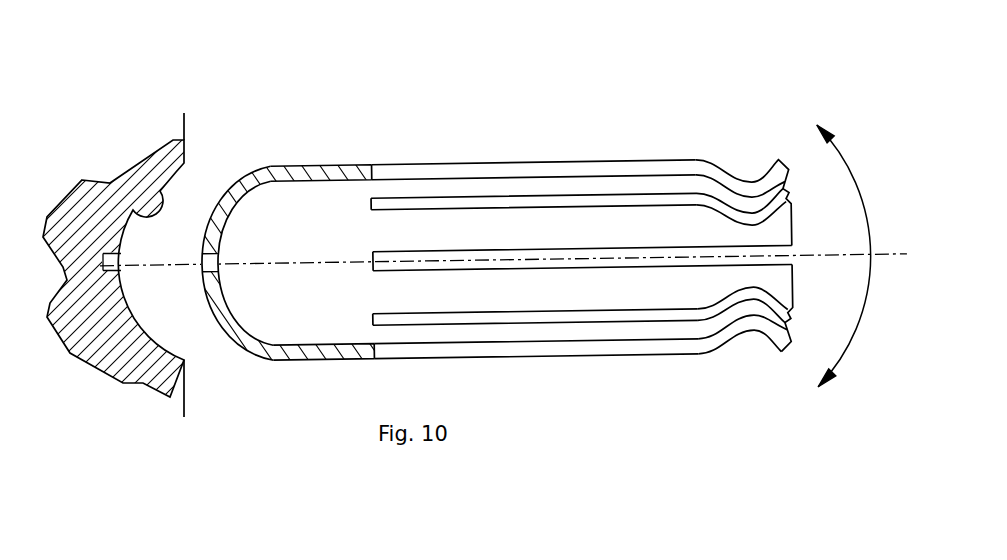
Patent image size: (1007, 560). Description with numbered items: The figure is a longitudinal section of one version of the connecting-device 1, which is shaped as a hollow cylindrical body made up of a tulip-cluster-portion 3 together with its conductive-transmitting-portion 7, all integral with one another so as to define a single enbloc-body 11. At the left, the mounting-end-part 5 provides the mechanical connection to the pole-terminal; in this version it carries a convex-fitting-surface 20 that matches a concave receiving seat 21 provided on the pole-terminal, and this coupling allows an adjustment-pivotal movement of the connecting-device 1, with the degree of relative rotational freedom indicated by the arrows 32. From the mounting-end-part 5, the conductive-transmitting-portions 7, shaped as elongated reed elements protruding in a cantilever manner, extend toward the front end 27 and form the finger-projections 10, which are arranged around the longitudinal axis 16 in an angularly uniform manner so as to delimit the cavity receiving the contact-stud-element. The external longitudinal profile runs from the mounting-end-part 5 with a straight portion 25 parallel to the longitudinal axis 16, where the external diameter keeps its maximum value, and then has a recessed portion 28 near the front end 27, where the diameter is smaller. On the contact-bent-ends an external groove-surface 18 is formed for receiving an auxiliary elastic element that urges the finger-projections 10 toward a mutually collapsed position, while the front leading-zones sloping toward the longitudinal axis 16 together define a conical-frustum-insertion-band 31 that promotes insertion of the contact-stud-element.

The connecting-device 1 is at (363, 164).
The tulip-cluster-portion 3 is at (377, 5).
The mounting-end-part 5 is at (242, 179).
The conductive-transmitting-portion 7 is at (474, 172).
The finger-projection 10 is at (590, 161).
The enbloc-body 11 is at (715, 77).
The longitudinal axis 16 is at (908, 255).
The external groove-surface 18 is at (748, 182).
The convex-fitting-surface 20 is at (205, 215).
The concave receiving seat 21 is at (132, 213).
The straight portion 25 is at (416, 163).
The front end 27 is at (812, 307).
The recessed portion 28 is at (750, 331).
The conical-frustum-insertion-band 31 is at (793, 215).
The arrows 32 is at (861, 314).